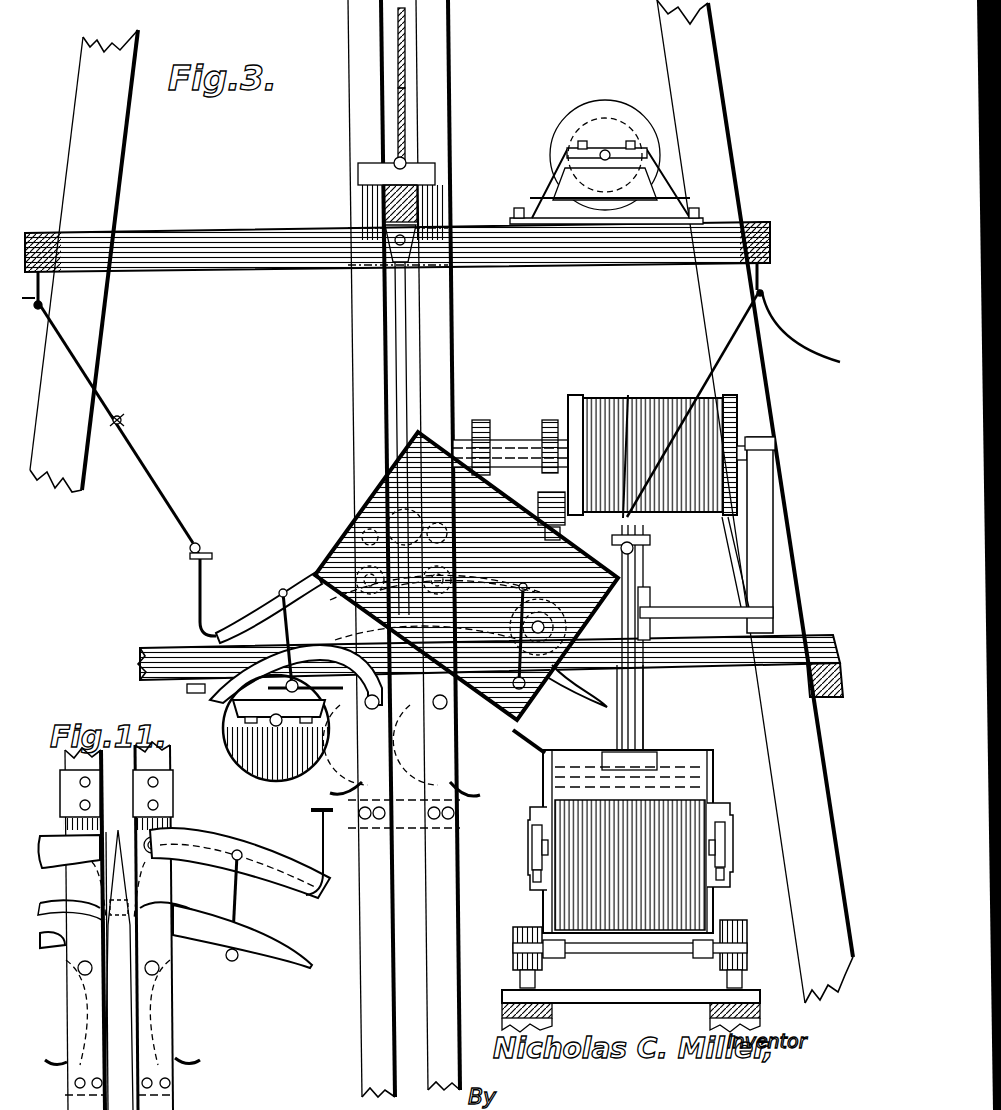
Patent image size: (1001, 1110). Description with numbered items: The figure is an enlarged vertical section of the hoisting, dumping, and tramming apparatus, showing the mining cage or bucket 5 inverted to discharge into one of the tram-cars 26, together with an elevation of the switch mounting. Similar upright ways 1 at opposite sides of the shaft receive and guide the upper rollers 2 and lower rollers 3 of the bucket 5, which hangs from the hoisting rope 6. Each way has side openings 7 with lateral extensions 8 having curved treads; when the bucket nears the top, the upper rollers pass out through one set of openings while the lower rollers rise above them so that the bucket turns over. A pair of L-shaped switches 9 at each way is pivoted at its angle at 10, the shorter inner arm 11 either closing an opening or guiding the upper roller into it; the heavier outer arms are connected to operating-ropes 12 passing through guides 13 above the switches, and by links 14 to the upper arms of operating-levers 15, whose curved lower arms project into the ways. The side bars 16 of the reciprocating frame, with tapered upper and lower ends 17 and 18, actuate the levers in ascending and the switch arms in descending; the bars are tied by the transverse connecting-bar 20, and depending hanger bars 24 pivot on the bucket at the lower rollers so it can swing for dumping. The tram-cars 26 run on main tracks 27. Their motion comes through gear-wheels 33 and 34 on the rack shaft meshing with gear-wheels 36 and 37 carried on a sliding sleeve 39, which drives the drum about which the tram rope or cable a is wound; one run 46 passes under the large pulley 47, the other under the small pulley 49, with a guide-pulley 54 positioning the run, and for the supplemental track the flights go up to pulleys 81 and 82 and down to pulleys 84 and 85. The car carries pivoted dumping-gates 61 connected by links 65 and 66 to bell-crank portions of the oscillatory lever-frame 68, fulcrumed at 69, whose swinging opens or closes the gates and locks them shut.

In FIG. 3, the upright ways 1 is at (350, 313).
In FIG. 11, the upright ways 1 is at (106, 762).
In FIG. 3, the upper rollers 2 is at (545, 612).
In FIG. 3, the lower rollers 3 is at (350, 522).
In FIG. 3, the mining cage or bucket 5 is at (457, 562).
In FIG. 3, the hoisting rope 6 is at (406, 62).
In FIG. 11, the side openings 7 is at (119, 899).
In FIG. 3, the lateral extensions 8 is at (556, 682).
In FIG. 11, the lateral extensions 8 is at (276, 946).
In FIG. 3, the switches 9 is at (305, 585).
In FIG. 11, the switches 9 is at (215, 842).
In FIG. 3, the pivot 10 is at (421, 551).
In FIG. 11, the pivot 10 is at (80, 842).
In FIG. 3, the inner arm 11 is at (427, 620).
In FIG. 11, the inner arm 11 is at (135, 904).
In FIG. 3, the operating-ropes 12 is at (152, 458).
In FIG. 3, the guides 13 is at (42, 285).
In FIG. 3, the links 14 is at (290, 623).
In FIG. 11, the links 14 is at (245, 870).
In FIG. 3, the operating-levers 15 is at (470, 718).
In FIG. 11, the operating-levers 15 is at (60, 960).
In FIG. 3, the side bars 16 is at (406, 110).
In FIG. 11, the upper ends 17 is at (119, 952).
In FIG. 3, the lower ends 18 is at (408, 250).
In FIG. 3, the transverse connecting-bar 20 is at (383, 207).
In FIG. 3, the hanger bars 24 is at (408, 372).
In FIG. 3, the tram-cars 26 is at (631, 831).
In FIG. 3, the main tracks 27 is at (612, 997).
In FIG. 3, the gear-wheel 33 is at (540, 492).
In FIG. 3, the gear-wheel 34 is at (550, 541).
In FIG. 3, the gear-wheel 36 is at (481, 420).
In FIG. 3, the gear-wheel 37 is at (550, 420).
In FIG. 3, the sliding sleeve 39 is at (520, 448).
In FIG. 3, the run of tram cable 46 is at (622, 396).
In FIG. 3, the large pulley 47 is at (645, 575).
In FIG. 3, the small pulley 49 is at (650, 598).
In FIG. 3, the guide-pulley 54 is at (645, 708).
In FIG. 3, the dumping-gates 61 is at (680, 906).
In FIG. 3, the link 65 is at (535, 853).
In FIG. 3, the link 66 is at (531, 845).
In FIG. 3, the oscillatory lever-frame 68 is at (538, 808).
In FIG. 3, the fulcrum 69 is at (530, 875).
In FIG. 3, the pulley 81 is at (604, 140).
In FIG. 3, the pulley 82 is at (602, 108).
In FIG. 3, the pulley 84 is at (266, 750).
In FIG. 3, the pulley 85 is at (232, 730).
In FIG. 3, the tram rope or cable a is at (637, 433).